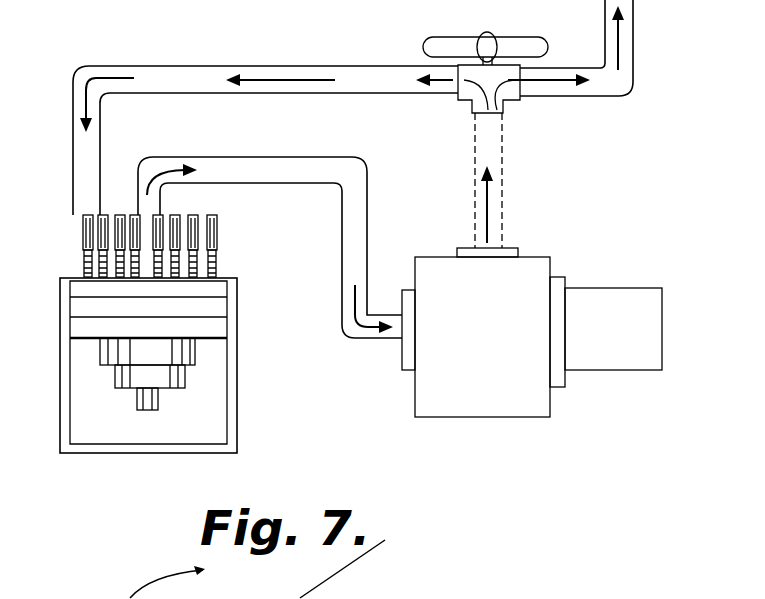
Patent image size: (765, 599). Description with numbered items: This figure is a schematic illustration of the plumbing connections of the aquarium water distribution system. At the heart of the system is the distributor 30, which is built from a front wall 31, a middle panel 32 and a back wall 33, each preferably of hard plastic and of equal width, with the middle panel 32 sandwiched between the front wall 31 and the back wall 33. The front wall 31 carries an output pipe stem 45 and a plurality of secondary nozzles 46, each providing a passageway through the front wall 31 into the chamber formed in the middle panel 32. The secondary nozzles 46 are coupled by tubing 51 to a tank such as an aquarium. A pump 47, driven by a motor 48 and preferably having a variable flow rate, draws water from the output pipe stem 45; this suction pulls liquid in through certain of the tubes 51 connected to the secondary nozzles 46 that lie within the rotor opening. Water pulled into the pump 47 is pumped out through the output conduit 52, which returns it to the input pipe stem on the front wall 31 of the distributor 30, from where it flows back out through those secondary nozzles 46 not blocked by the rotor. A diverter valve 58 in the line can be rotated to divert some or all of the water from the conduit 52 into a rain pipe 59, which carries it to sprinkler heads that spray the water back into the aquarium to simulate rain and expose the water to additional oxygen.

The distributor 30 is at (190, 365).
The front wall 31 is at (75, 290).
The middle panel 32 is at (75, 311).
The back wall 33 is at (78, 334).
The output pipe stem 45 is at (153, 200).
The secondary nozzles 46 is at (218, 263).
The pump 47 is at (480, 418).
The motor 48 is at (622, 371).
The tubing 51 is at (120, 214).
The output conduit 52 is at (73, 161).
The diverter valve 58 is at (518, 41).
The rain pipe 59 is at (632, 33).